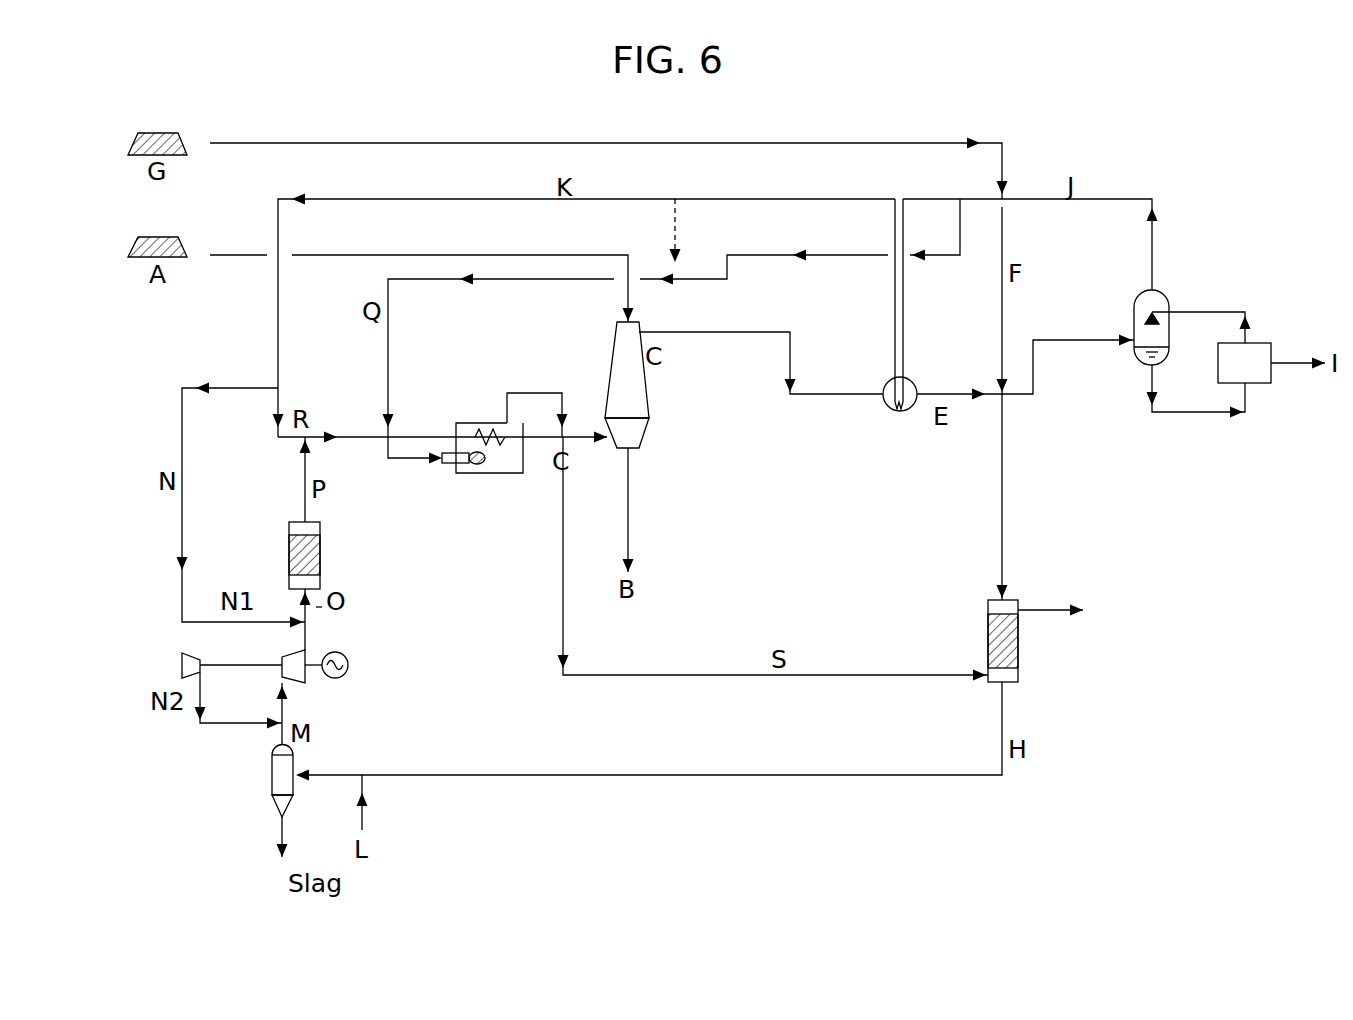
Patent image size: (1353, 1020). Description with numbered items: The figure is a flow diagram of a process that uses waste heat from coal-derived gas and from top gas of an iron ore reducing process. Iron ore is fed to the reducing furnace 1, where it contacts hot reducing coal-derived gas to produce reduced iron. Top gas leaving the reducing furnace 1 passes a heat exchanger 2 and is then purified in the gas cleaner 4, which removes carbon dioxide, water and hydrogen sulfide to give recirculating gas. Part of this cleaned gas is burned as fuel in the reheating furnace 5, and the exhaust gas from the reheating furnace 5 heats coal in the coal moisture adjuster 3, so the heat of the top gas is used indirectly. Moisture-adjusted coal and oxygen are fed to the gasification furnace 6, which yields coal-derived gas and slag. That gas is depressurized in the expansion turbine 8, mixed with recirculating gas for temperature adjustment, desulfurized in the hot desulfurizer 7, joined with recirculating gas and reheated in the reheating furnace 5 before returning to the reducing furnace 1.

The reducing furnace 1 is at (642, 396).
The heat exchanger 2 is at (915, 383).
The coal moisture adjuster 3 is at (1022, 596).
The gas cleaner 4 is at (1195, 298).
The reheating furnace 5 is at (490, 423).
The gasification furnace 6 is at (278, 775).
The hot desulfurizer 7 is at (322, 546).
The expansion turbine 8 is at (324, 686).